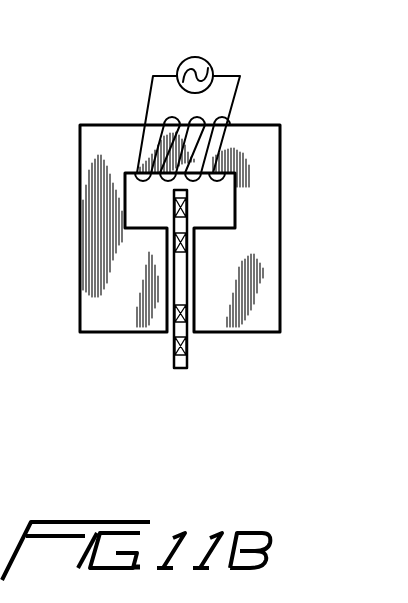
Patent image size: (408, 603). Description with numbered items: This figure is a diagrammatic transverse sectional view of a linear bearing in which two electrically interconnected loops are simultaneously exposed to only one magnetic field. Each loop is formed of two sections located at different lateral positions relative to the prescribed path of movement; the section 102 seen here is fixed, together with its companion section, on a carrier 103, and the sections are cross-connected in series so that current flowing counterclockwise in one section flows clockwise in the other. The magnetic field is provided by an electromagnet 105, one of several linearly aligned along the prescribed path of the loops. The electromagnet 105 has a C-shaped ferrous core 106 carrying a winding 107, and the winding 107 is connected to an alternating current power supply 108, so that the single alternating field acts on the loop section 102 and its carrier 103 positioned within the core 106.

The loop section 102 is at (192, 343).
The carrier 103 is at (175, 362).
The electromagnet 105 is at (240, 127).
The C-shaped ferrous core 106 is at (102, 322).
The winding 107 is at (140, 147).
The alternating current power supply 108 is at (178, 59).